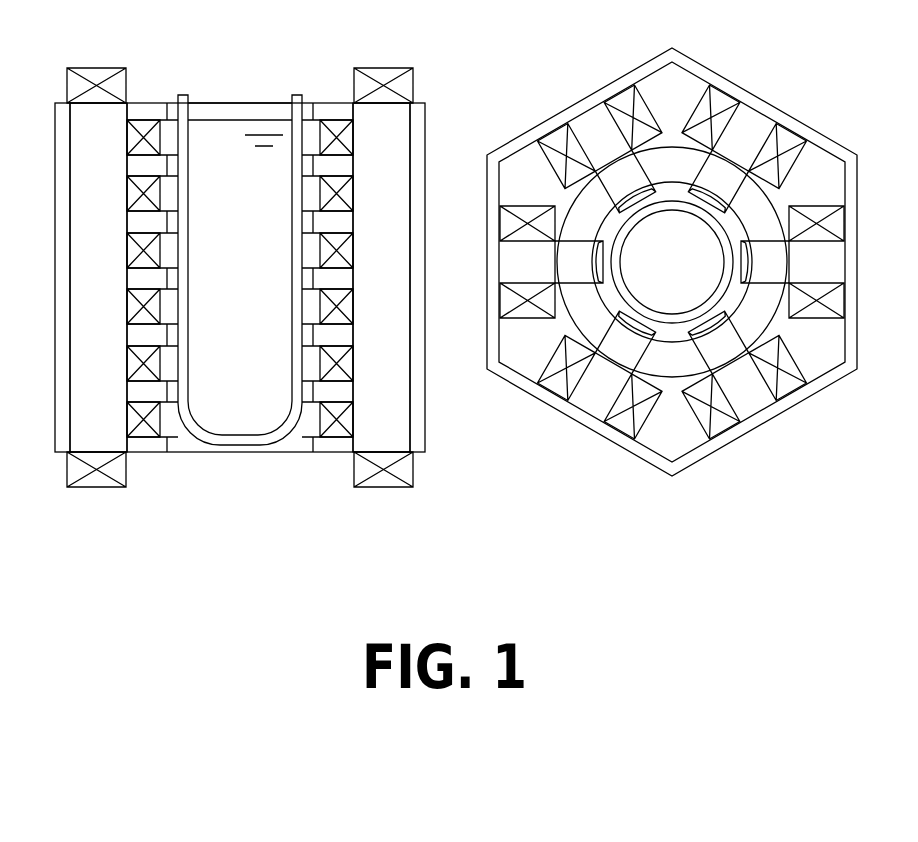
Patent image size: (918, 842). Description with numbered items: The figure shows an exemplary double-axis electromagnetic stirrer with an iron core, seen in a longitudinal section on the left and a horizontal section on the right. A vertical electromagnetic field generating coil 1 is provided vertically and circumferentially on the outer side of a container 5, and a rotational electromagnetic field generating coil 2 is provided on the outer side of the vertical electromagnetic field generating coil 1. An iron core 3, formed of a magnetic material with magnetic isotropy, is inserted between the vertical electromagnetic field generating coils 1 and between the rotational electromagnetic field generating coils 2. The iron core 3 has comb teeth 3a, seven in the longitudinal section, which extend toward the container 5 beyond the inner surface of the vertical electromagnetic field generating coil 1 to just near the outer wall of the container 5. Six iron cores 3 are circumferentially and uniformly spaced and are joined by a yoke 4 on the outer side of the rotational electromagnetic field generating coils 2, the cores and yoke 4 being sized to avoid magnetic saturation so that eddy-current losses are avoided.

The vertical electromagnetic field generating coil 1 is at (152, 262).
The rotational electromagnetic field generating coil 2 is at (122, 88).
The iron core 3 is at (83, 133).
The comb teeth 3a is at (138, 163).
The yoke 4 is at (517, 140).
The container 5 is at (620, 237).